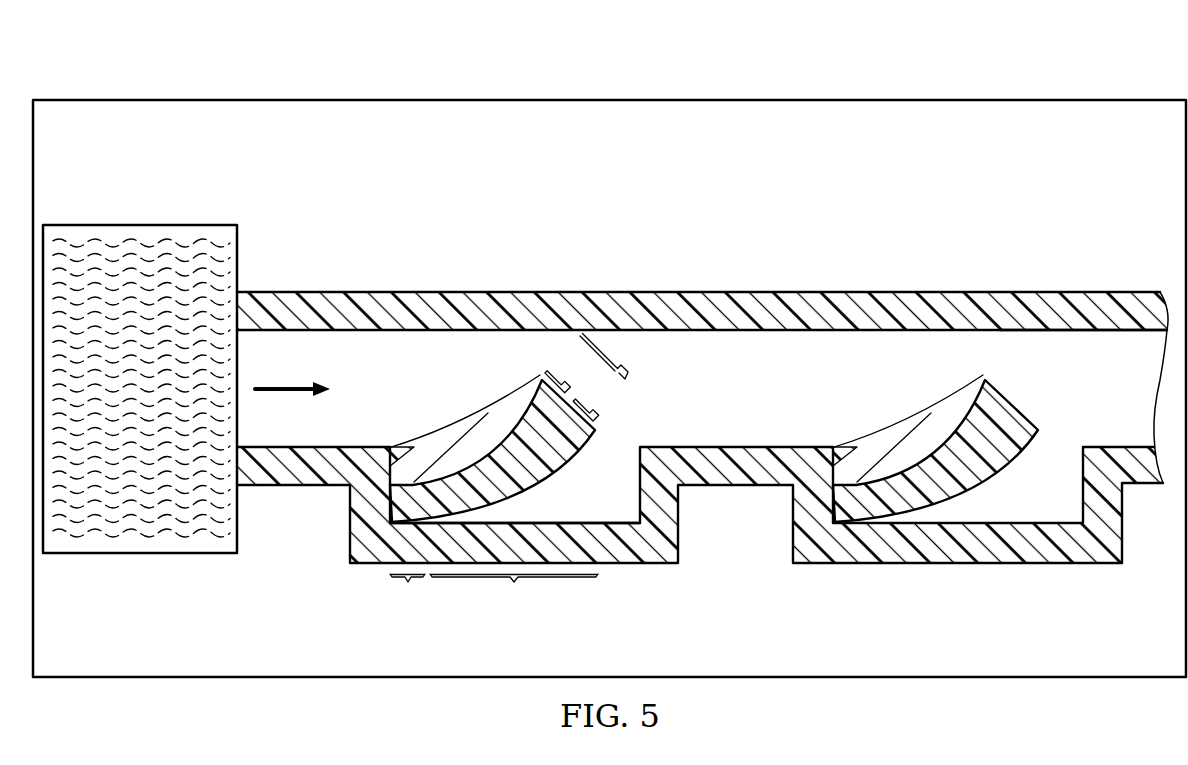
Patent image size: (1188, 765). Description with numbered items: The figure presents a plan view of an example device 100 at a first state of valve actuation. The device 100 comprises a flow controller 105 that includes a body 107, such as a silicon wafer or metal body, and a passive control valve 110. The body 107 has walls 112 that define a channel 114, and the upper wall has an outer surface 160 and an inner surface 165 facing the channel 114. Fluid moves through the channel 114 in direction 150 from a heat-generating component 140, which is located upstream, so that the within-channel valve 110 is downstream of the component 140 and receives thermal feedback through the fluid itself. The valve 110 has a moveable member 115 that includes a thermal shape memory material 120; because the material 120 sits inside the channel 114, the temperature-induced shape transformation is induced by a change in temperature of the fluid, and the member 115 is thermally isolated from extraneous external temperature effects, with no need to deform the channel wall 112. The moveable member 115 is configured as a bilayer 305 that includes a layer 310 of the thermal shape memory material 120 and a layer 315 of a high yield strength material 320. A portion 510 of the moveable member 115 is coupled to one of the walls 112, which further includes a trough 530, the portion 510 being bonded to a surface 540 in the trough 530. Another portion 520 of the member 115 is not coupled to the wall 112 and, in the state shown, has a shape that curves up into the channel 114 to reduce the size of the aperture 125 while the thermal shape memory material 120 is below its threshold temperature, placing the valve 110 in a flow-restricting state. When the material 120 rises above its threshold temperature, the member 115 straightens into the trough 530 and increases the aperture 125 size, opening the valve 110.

The device 100 is at (286, 59).
The flow controller 105 is at (965, 94).
The body 107 is at (628, 643).
The passive control valve 110 is at (207, 175).
The walls 112 is at (702, 443).
The channel 114 is at (850, 400).
The moveable member 115 is at (504, 437).
The thermal shape memory material 120 is at (433, 448).
The aperture 125 is at (662, 388).
The heat-generating component 140 is at (138, 555).
The direction 150 is at (293, 392).
The outer surface 160 is at (1095, 291).
The inner surface 165 is at (1108, 332).
The bilayer 305 is at (615, 357).
The layer of thermal shape memory material 310 is at (567, 373).
The layer of high yield strength material 315 is at (597, 402).
The high yield strength material 320 is at (537, 470).
The portion of the moveable member 510 is at (409, 594).
The another portion of the moveable member 520 is at (514, 594).
The trough 530 is at (1031, 497).
The surface in the trough 540 is at (607, 522).